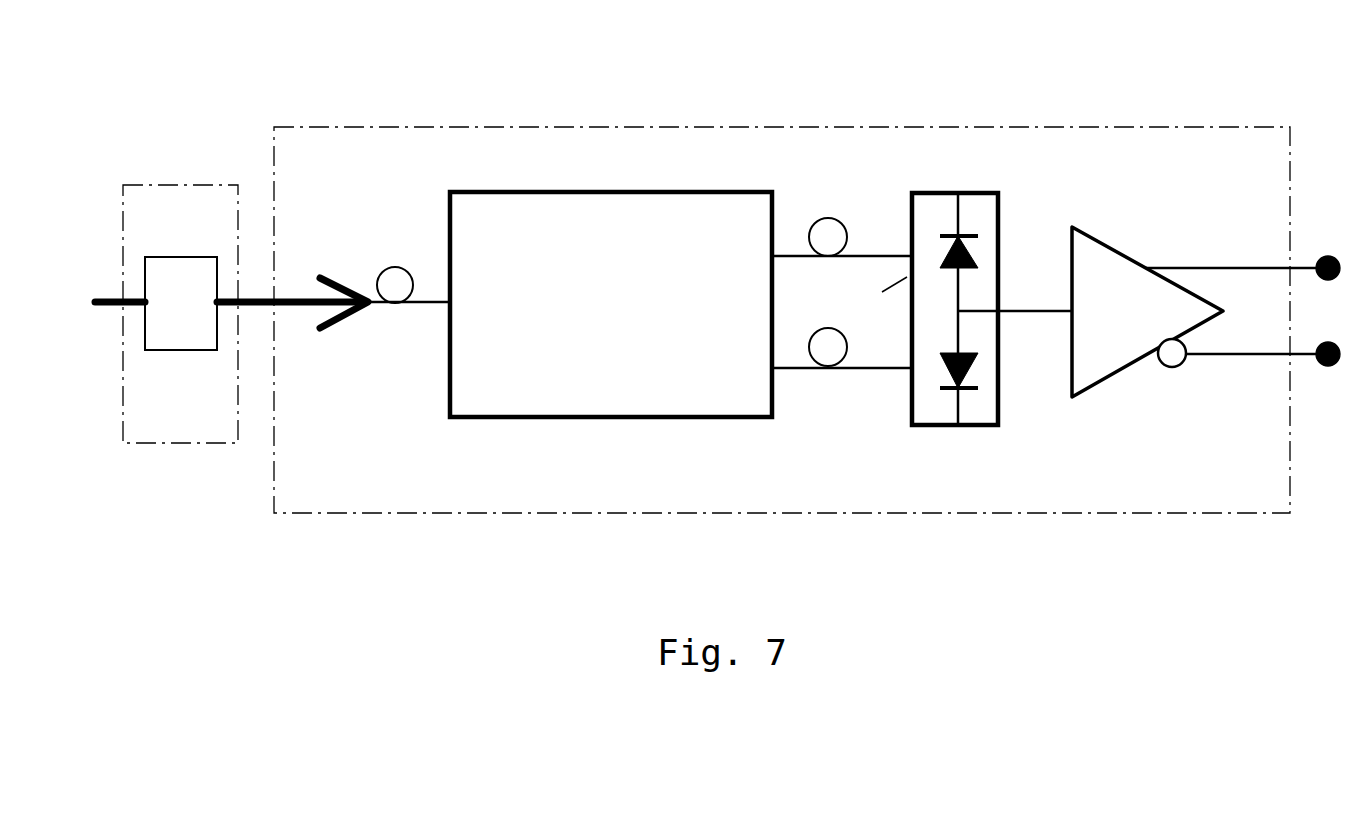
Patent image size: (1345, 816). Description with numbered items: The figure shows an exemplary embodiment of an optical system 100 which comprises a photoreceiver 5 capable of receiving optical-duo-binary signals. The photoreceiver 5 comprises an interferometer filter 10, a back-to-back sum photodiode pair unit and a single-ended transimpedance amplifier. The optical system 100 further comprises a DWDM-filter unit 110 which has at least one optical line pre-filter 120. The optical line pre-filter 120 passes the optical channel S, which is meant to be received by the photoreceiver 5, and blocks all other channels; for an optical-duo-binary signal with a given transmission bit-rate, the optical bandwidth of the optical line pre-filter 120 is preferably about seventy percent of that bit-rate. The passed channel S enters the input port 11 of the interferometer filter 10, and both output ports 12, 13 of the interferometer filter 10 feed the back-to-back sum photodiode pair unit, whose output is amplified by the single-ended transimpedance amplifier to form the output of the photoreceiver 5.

The optical system 100 is at (450, 105).
The photoreceiver 5 is at (683, 127).
The DWDM-filter unit 110 is at (183, 185).
The optical line pre-filter 120 is at (181, 303).
The interferometer filter 10 is at (577, 192).
The input port 11 is at (447, 305).
The output port 12 is at (775, 247).
The output port 13 is at (775, 368).